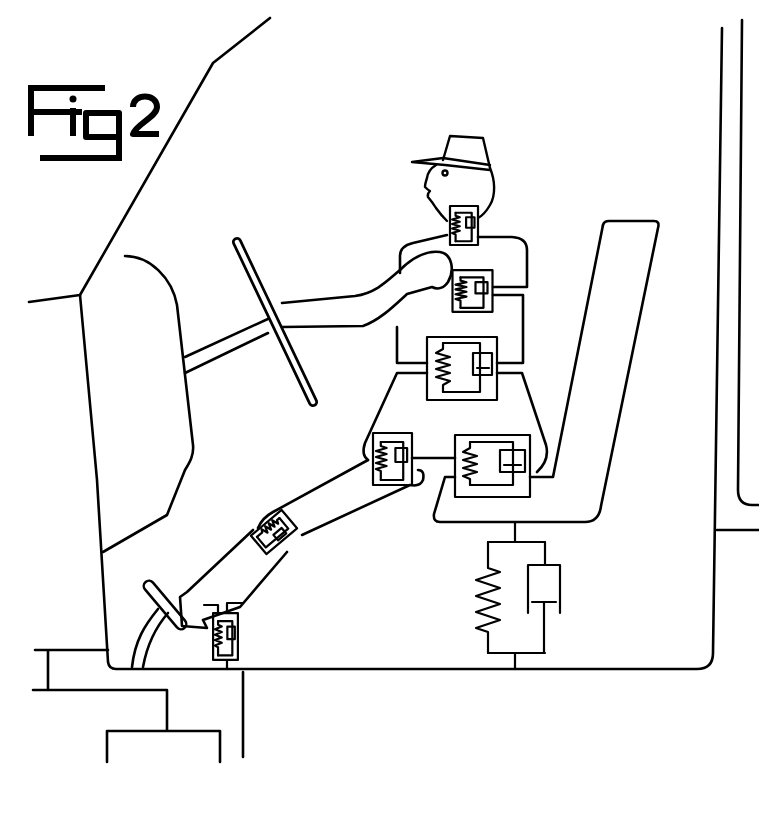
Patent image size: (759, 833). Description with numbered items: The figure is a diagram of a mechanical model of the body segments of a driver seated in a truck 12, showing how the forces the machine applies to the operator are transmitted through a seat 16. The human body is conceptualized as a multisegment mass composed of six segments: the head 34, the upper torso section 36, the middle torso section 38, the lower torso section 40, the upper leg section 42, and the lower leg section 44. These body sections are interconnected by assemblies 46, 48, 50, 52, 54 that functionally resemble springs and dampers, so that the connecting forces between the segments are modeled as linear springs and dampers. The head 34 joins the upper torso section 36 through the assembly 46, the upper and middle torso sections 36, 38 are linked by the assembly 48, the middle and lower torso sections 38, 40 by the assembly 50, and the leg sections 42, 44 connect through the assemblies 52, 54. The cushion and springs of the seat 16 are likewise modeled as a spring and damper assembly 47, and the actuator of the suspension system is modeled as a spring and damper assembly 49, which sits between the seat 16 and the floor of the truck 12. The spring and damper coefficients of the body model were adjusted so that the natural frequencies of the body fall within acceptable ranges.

The truck 12 is at (622, 676).
The truck seat 16 is at (630, 277).
The head 34 is at (485, 183).
The upper torso section 36 is at (508, 250).
The middle torso section 38 is at (515, 323).
The lower torso section 40 is at (515, 413).
The upper leg section 42 is at (350, 503).
The lower leg section 44 is at (262, 579).
The spring and damper assembly 46 is at (440, 222).
The spring and damper assembly 47 is at (523, 483).
The spring and damper assembly 48 is at (445, 301).
The spring and damper assembly 49 is at (570, 591).
The spring and damper assembly 50 is at (423, 383).
The spring and damper assembly 52 is at (356, 456).
The spring and damper assembly 54 is at (252, 508).